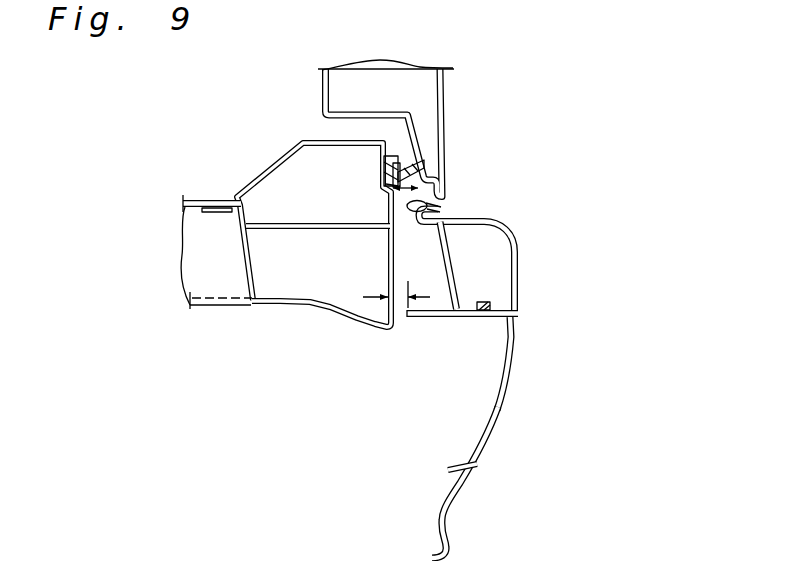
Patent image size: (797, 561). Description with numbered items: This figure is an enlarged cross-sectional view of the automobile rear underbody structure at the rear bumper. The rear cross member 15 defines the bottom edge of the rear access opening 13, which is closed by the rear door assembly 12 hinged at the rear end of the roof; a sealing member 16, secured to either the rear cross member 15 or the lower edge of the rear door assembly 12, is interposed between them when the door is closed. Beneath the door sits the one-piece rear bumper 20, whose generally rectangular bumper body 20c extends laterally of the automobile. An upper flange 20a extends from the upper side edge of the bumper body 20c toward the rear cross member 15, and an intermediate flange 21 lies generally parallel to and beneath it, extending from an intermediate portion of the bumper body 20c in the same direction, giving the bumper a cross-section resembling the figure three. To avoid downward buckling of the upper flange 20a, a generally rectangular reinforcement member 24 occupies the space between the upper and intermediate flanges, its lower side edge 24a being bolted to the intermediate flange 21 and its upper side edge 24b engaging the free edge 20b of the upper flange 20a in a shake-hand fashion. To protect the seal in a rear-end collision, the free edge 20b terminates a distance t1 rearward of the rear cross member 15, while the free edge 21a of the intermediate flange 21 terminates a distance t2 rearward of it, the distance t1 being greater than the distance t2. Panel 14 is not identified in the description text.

The rear door assembly 12 is at (445, 102).
The rear access opening 13 is at (342, 130).
The roof panel 14 is at (210, 283).
The rear cross member 15 is at (334, 321).
The sealing member 16 is at (393, 168).
The distance t1 is at (430, 170).
The distance t2 is at (391, 290).
The rear bumper 20 is at (497, 443).
The upper flange 20a is at (447, 219).
The free edge of the upper flange 20b is at (446, 205).
The bumper body 20c is at (512, 377).
The intermediate flange 21 is at (425, 317).
The free edge of the intermediate flange 21a is at (400, 318).
The reinforcement member 24 is at (457, 287).
The lower side edge 24a is at (475, 309).
The upper side edge 24b is at (424, 226).